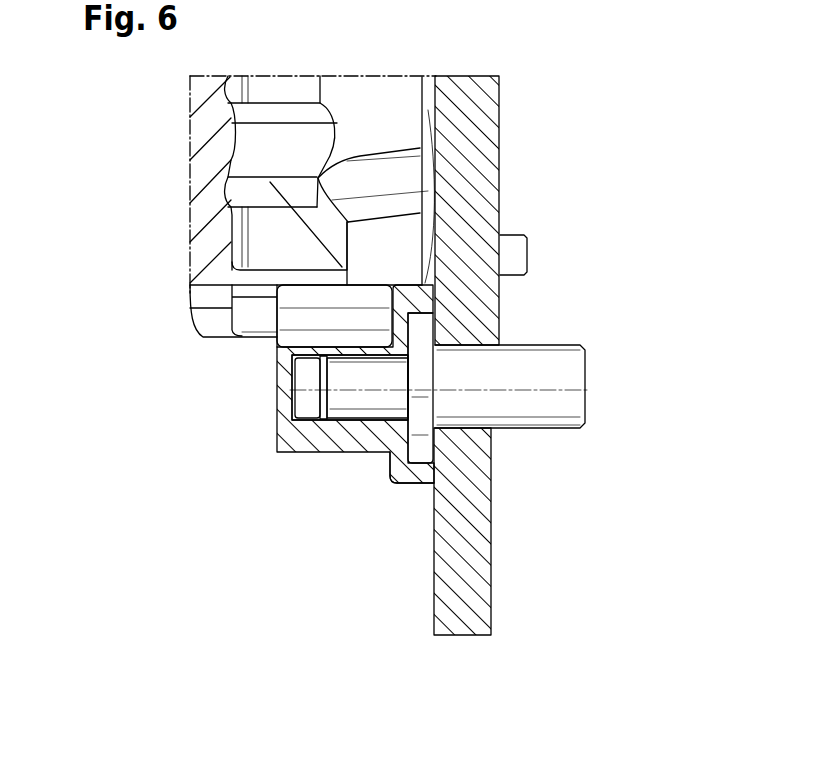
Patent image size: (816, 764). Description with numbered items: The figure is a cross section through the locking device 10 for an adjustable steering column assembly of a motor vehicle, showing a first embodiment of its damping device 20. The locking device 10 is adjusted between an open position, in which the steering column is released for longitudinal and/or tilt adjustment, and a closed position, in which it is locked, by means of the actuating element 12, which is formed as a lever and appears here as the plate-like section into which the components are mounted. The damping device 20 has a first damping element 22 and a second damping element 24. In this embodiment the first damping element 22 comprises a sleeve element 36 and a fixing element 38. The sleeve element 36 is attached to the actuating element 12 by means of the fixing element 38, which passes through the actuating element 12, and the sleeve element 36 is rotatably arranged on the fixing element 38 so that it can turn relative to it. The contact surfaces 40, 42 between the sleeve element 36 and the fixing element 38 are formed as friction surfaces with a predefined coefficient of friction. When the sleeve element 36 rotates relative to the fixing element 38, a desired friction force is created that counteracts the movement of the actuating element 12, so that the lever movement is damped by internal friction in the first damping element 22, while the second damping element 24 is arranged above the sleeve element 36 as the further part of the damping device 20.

The locking device 10 is at (538, 86).
The actuating element 12 is at (468, 517).
The damping device 20 is at (188, 356).
The first damping element 22 is at (380, 462).
The second damping element 24 is at (203, 175).
The sleeve element 36 is at (290, 434).
The fixing element 38 is at (565, 373).
The contact surface 40 is at (332, 424).
The contact surface 42 is at (306, 417).